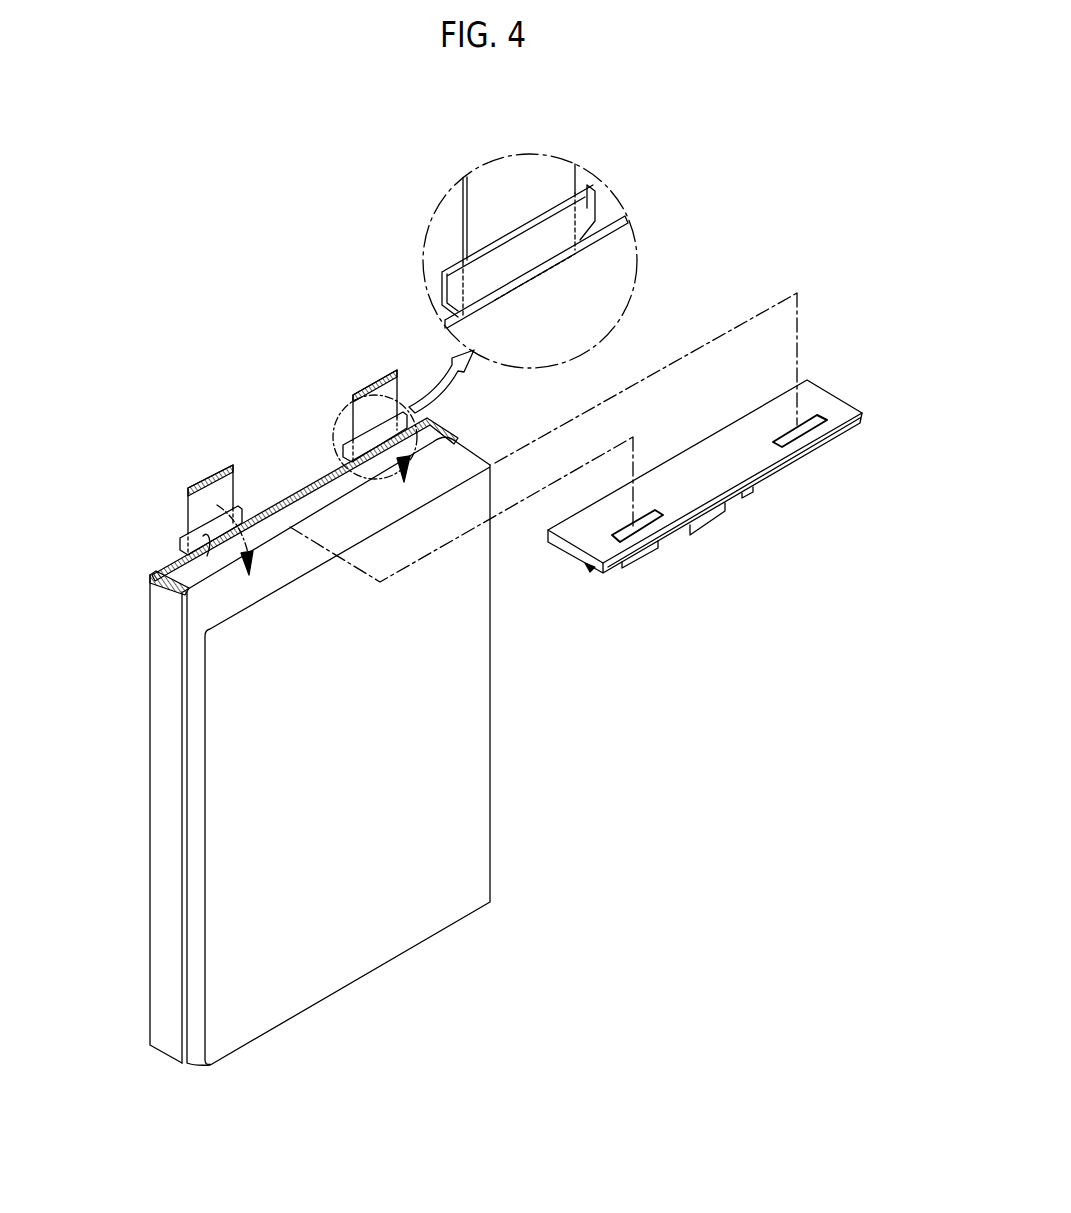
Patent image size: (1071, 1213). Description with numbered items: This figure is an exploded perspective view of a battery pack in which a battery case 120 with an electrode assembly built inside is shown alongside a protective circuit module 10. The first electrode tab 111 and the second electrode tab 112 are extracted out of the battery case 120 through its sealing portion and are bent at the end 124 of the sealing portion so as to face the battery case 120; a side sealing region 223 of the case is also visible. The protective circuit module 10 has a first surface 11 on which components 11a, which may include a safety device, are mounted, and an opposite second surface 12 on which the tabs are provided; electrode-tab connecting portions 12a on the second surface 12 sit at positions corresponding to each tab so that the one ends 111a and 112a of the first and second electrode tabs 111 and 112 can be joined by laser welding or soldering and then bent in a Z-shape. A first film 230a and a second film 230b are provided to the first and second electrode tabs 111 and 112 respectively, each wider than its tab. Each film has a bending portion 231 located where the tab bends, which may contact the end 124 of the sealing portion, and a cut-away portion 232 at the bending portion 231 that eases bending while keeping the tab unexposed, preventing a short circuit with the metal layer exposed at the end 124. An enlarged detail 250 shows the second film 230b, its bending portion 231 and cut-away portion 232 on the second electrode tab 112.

The protective circuit module 10 is at (846, 378).
The first surface 11 is at (840, 437).
The components 11a is at (653, 552).
The second surface 12 is at (757, 460).
The electrode-tab connecting portion 12a is at (797, 428).
The first electrode tab 111 is at (219, 465).
The one end of the first electrode tab 111a is at (200, 486).
The second electrode tab 112 is at (353, 394).
The one end of the second electrode tab 112a is at (381, 378).
The battery case 120 is at (152, 812).
The end of the sealing portion 124 is at (300, 498).
The side sealing portion 223 is at (165, 578).
The first film 230a is at (183, 540).
The second film 230b is at (587, 204).
The bending portion 231 is at (500, 299).
The cut-away portion 232 is at (466, 293).
The enlarged detail portion 250 is at (589, 113).